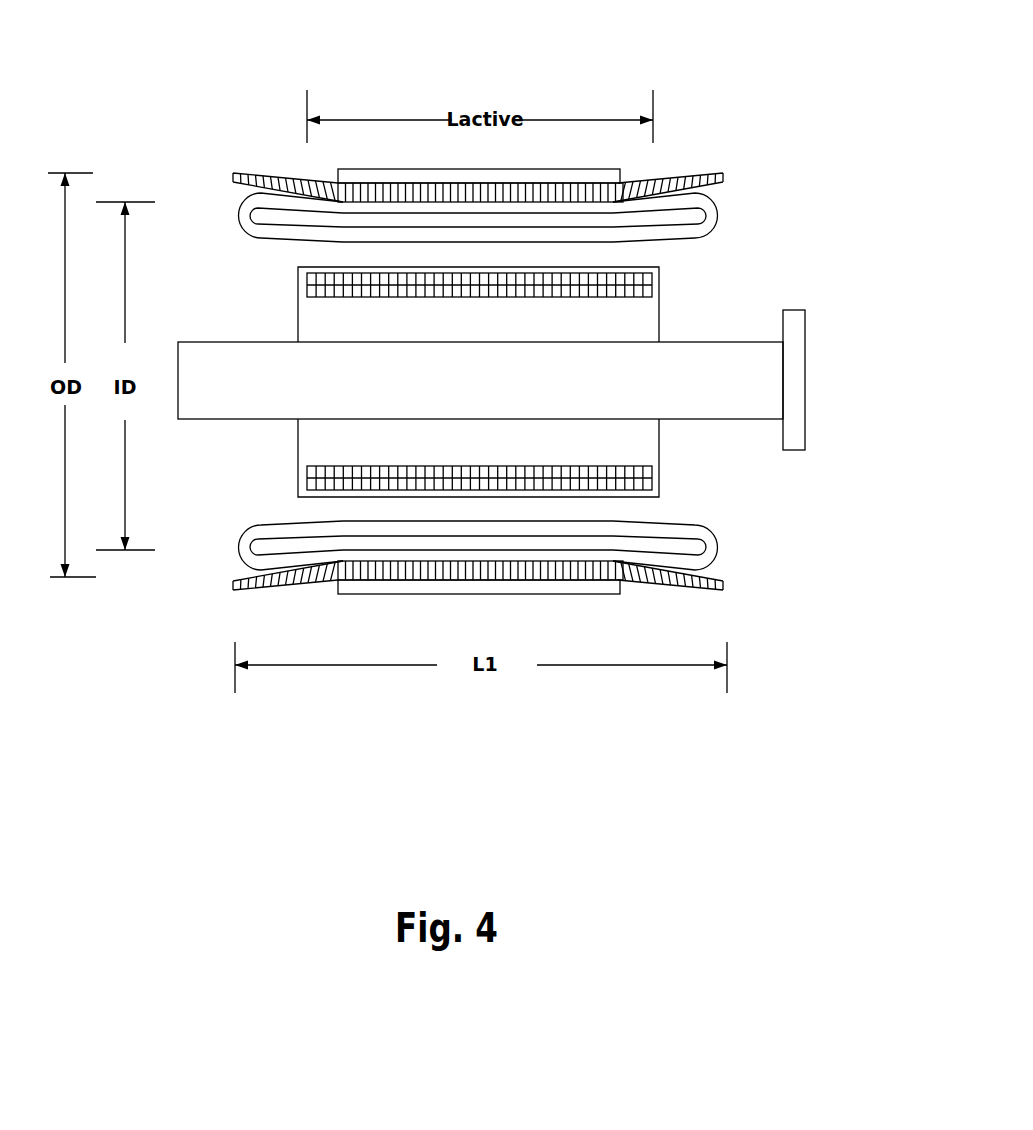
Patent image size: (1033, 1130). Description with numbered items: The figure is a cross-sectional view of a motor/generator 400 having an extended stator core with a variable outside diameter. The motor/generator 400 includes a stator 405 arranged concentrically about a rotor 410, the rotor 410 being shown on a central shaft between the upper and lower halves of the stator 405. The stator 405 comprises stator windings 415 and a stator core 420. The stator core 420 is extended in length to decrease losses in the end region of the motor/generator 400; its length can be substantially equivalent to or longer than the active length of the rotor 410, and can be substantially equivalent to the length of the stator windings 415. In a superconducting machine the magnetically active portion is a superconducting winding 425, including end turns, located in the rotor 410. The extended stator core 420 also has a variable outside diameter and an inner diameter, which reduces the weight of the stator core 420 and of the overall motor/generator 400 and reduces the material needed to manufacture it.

The motor/generator 400 is at (620, 46).
The stator 405 is at (762, 190).
The rotor 410 is at (686, 297).
The stator windings 415 is at (722, 557).
The stator core 420 is at (682, 581).
The superconducting winding 425 is at (652, 472).